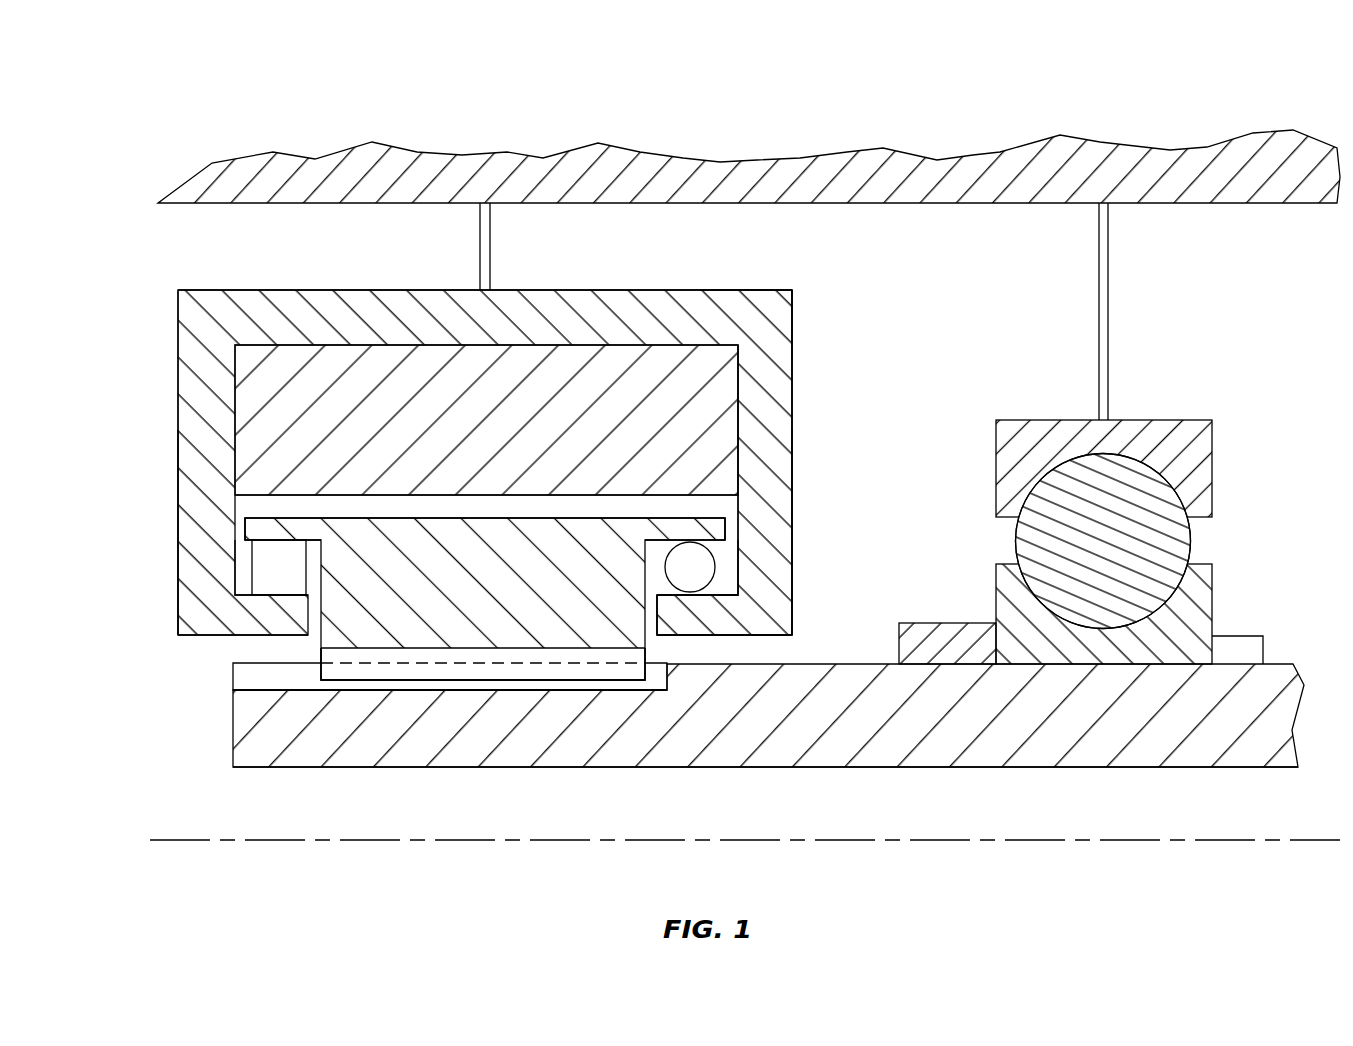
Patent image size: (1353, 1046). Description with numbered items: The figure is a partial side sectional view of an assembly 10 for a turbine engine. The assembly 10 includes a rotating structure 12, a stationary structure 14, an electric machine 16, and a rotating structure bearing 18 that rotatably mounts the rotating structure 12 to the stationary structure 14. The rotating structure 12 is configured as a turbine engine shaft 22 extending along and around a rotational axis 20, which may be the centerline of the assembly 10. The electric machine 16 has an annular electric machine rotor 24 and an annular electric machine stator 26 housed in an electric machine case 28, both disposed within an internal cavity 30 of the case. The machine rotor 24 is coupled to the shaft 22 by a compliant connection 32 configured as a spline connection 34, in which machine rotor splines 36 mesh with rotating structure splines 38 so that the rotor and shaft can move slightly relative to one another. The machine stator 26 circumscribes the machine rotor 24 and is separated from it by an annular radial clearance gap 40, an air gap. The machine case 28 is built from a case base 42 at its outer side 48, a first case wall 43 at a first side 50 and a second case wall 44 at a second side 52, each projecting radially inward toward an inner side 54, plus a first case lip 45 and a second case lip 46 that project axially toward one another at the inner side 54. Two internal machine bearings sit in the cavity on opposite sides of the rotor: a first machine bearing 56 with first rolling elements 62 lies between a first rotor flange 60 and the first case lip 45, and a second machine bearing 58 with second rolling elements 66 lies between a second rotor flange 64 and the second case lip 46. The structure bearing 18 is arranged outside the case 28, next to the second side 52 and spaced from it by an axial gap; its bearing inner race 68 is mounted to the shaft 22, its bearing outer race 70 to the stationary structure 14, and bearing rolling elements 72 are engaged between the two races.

The assembly 10 is at (701, 499).
The rotating structure 12 is at (710, 730).
The stationary structure 14 is at (430, 143).
The electric machine 16 is at (478, 465).
The rotating structure bearing 18 is at (1103, 433).
The rotational axis 20 is at (1332, 843).
The turbine engine shaft 22 is at (265, 767).
The electric machine rotor 24 is at (587, 518).
The electric machine stator 26 is at (580, 344).
The electric machine case 28 is at (797, 312).
The internal cavity 30 is at (418, 495).
The compliant connection 32 is at (469, 692).
The spline connection 34 is at (450, 669).
The machine rotor splines 36 is at (557, 684).
The rotating structure splines 38 is at (250, 668).
The annular radial clearance gap 40 is at (485, 529).
The case base 42 is at (290, 290).
The first case wall 43 is at (178, 416).
The second case wall 44 is at (796, 420).
The first case lip 45 is at (272, 637).
The second case lip 46 is at (702, 637).
The outer side 48 is at (745, 290).
The first side 50 is at (178, 468).
The second side 52 is at (796, 478).
The inner side 54 is at (678, 637).
The first machine bearing 56 is at (240, 560).
The second machine bearing 58 is at (723, 562).
The first rotor flange 60 is at (245, 530).
The first rolling elements 62 is at (250, 578).
The second rotor flange 64 is at (726, 530).
The second rolling elements 66 is at (714, 574).
The bearing inner race 68 is at (1215, 590).
The bearing outer race 70 is at (1215, 468).
The bearing rolling elements 72 is at (1192, 542).